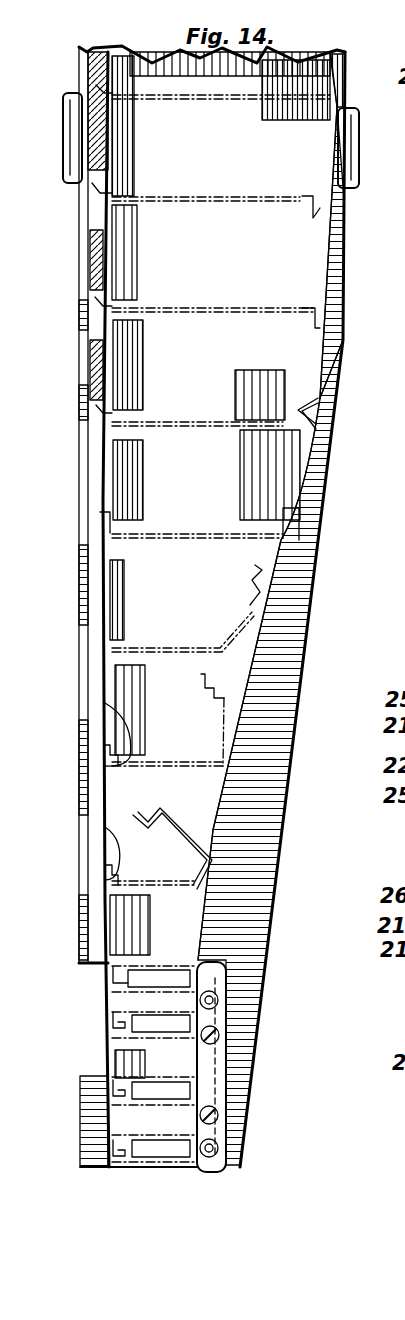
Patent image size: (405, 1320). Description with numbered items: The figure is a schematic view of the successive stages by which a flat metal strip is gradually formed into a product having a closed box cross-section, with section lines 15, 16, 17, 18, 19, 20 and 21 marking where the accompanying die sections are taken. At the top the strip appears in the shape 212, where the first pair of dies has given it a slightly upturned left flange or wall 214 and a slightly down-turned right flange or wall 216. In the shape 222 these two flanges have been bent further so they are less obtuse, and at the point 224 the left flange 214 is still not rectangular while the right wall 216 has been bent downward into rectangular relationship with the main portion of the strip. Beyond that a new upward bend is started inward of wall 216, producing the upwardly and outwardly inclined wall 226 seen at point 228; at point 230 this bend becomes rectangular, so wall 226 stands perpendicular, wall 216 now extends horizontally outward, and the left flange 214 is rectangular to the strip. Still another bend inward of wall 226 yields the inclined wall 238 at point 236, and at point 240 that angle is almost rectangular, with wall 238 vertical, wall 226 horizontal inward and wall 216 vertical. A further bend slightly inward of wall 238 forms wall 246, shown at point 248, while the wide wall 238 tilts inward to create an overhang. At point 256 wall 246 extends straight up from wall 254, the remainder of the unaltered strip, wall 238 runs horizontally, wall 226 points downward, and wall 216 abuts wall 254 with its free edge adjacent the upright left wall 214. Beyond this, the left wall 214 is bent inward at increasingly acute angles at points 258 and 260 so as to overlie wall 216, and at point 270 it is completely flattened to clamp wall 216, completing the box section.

The initial bent shape 212 is at (279, 92).
The left flange or wall 214 is at (97, 86).
The right flange or wall 216 is at (326, 82).
The further-bent shape 222 is at (293, 182).
The point of rectangular right-flange bend 224 is at (295, 293).
The upwardly and outwardly inclined wall 226 is at (295, 420).
The point of inclined wall formation 228 is at (252, 422).
The point of rectangular bend of wall 226 230 is at (228, 530).
The point of wall 238 formation 236 is at (183, 640).
The wall 238 is at (250, 628).
The point of near-rectangular bend of wall 238 240 is at (105, 703).
The wall 246 is at (200, 878).
The point of wall 246 formation 248 is at (105, 827).
The wall 254 is at (170, 887).
The point of vertical wall 246 256 is at (140, 995).
The point of inward bending of wall 214 258 is at (140, 1040).
The point of further inward bending of wall 214 260 is at (148, 1078).
The final point of closed box section 270 is at (162, 1165).
The section line for FIG. 15 is at (93, 107).
The section line for FIG. 16 is at (103, 321).
The section line for FIG. 17 is at (100, 537).
The section line for FIG. 18 is at (103, 769).
The section line for FIG. 19 is at (125, 883).
The section line for FIG. 20 is at (95, 1105).
The section line for FIG. 21 is at (95, 1152).